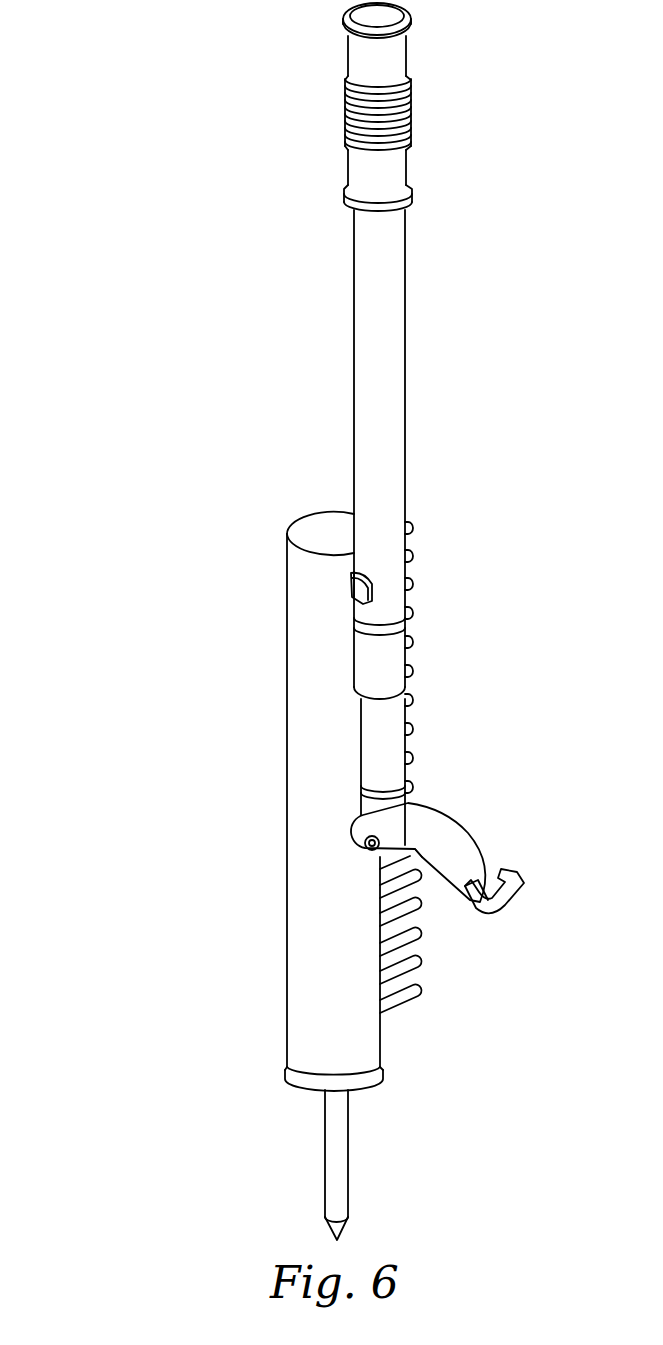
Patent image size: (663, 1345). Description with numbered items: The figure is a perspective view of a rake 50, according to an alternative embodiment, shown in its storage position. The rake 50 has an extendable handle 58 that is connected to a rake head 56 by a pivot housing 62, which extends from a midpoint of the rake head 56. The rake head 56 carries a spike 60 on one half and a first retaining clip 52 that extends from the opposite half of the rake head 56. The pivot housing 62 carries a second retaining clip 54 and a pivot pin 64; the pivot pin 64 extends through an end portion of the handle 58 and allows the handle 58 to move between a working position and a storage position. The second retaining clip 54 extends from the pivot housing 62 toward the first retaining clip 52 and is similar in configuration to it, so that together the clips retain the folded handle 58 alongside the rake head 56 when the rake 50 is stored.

The rake 50 is at (300, 621).
The first retaining clip 52 is at (352, 592).
The second retaining clip 54 is at (514, 871).
The rake head 56 is at (287, 713).
The extendable handle 58 is at (405, 371).
The spike 60 is at (325, 1151).
The pivot housing 62 is at (461, 828).
The pivot pin 64 is at (364, 843).